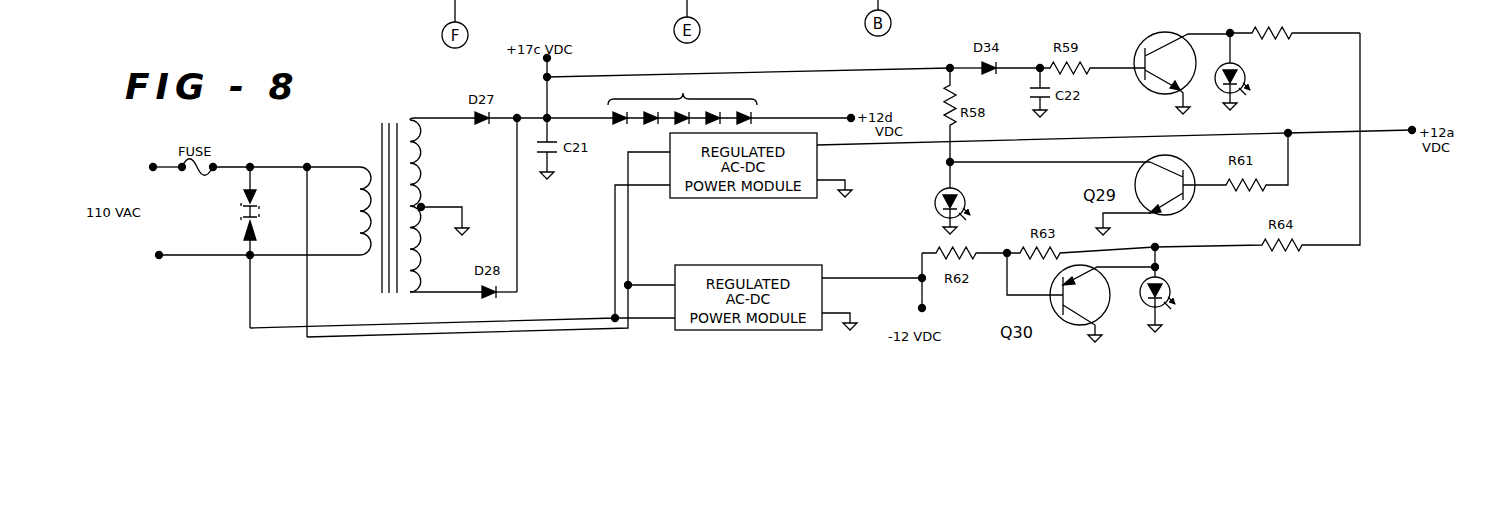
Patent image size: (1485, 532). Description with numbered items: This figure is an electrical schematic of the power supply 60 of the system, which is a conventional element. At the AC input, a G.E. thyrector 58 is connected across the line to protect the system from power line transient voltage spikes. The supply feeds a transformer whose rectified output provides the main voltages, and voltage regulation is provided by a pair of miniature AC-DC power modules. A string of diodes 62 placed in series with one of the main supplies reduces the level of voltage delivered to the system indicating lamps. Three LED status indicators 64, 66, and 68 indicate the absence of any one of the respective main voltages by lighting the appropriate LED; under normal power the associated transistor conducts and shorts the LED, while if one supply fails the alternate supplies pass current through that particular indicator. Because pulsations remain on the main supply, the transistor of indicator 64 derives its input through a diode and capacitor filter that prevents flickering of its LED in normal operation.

The thyrector 58 is at (238, 219).
The power supply 60 is at (431, 94).
The string of diodes 62 is at (729, 100).
The LED status indicator 64 is at (1314, 18).
The LED status indicator 66 is at (902, 207).
The LED status indicator 68 is at (1250, 293).